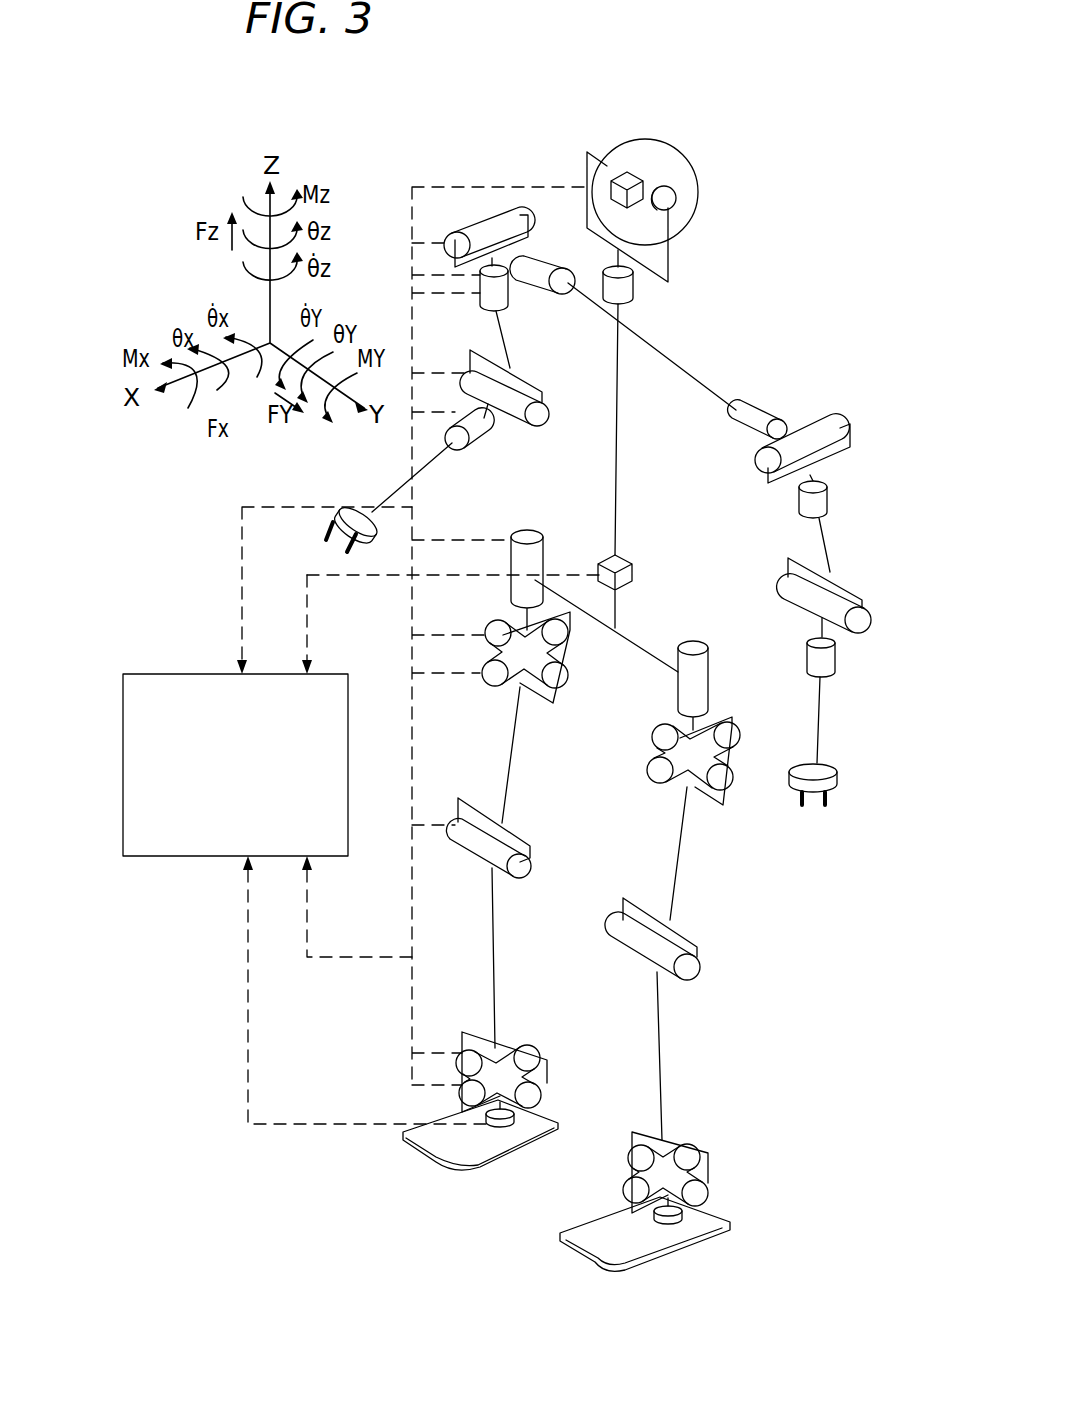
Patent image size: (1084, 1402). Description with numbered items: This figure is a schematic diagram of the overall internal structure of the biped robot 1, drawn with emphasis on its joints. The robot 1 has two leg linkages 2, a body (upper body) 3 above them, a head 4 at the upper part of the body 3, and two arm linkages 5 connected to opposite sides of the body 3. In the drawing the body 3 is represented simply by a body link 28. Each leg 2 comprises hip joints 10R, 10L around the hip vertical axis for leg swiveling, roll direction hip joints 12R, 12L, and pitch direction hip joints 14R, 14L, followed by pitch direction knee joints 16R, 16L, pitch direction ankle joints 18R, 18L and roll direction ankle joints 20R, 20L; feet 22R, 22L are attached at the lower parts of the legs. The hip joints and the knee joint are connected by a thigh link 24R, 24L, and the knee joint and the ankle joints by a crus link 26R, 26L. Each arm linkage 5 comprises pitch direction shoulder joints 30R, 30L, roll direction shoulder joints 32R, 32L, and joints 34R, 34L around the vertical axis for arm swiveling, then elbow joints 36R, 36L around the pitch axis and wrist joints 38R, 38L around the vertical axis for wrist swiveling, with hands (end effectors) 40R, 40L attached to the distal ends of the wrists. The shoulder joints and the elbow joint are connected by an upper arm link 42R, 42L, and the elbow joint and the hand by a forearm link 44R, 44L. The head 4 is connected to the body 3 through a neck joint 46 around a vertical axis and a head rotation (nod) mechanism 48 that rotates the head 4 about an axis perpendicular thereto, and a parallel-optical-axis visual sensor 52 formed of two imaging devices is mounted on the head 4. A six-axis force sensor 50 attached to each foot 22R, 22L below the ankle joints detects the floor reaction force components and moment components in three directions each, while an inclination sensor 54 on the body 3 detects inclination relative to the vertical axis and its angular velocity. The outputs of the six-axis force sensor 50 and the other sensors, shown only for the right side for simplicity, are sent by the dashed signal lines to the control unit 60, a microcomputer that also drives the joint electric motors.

The robot 1 is at (758, 341).
The leg linkage 2 is at (702, 956).
The body (upper body) 3 is at (635, 461).
The head 4 is at (676, 187).
The arm linkage 5 is at (822, 582).
The hip joint around vertical axis 10R is at (528, 530).
The hip joint around vertical axis 10L is at (700, 682).
The roll direction joint of hip 12R is at (490, 688).
The roll direction joint of hip 12L is at (718, 752).
The pitch direction joint of hip 14R is at (502, 668).
The pitch direction joint of hip 14L is at (714, 776).
The pitch direction joint of knee 16R is at (521, 878).
The pitch direction joint of knee 16L is at (700, 962).
The pitch direction joint of ankle 18R is at (532, 1051).
The pitch direction joint of ankle 18L is at (702, 1152).
The roll direction joint of ankle 20R is at (528, 1045).
The roll direction joint of ankle 20L is at (690, 1145).
The foot 22R is at (428, 1135).
The foot 22L is at (730, 1226).
The thigh link 24R is at (507, 803).
The thigh link 24L is at (680, 883).
The crus link 26R is at (493, 938).
The crus link 26L is at (660, 1054).
The body link 28 is at (618, 418).
The pitch direction joint of shoulder 30R is at (550, 265).
The pitch direction joint of shoulder 30L is at (770, 410).
The roll direction joint of shoulder 32R is at (512, 208).
The roll direction joint of shoulder 32L is at (832, 420).
The joint around vertical axis for arm swiveling 34R is at (505, 298).
The joint around vertical axis for arm swiveling 34L is at (828, 494).
The elbow joint 36R is at (543, 405).
The elbow joint 36L is at (865, 617).
The wrist joint 38R is at (485, 430).
The wrist joint 38L is at (832, 660).
The hand (end effector) 40R is at (360, 548).
The hand (end effector) 40L is at (832, 790).
The upper arm link 42R is at (510, 350).
The upper arm link 42L is at (830, 548).
The forearm link 44R is at (488, 406).
The forearm link 44L is at (822, 624).
The neck joint 46 is at (622, 302).
The head rotation (nod) mechanism 48 is at (672, 195).
The six-axis force sensor 50 is at (503, 1124).
The visual sensor 52 is at (638, 176).
The inclination sensor 54 is at (635, 560).
The control unit 60 is at (195, 673).